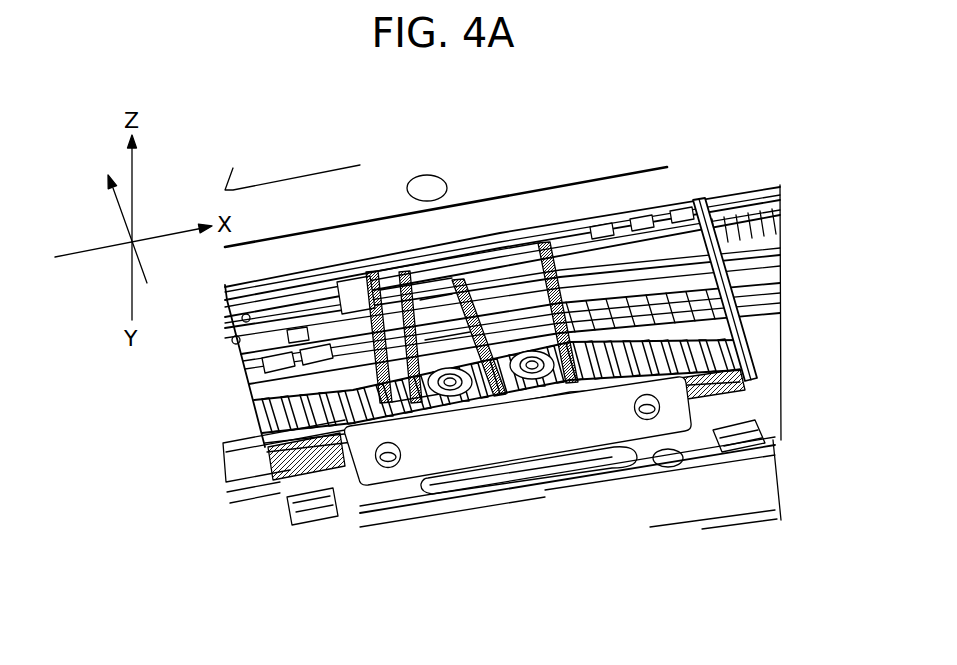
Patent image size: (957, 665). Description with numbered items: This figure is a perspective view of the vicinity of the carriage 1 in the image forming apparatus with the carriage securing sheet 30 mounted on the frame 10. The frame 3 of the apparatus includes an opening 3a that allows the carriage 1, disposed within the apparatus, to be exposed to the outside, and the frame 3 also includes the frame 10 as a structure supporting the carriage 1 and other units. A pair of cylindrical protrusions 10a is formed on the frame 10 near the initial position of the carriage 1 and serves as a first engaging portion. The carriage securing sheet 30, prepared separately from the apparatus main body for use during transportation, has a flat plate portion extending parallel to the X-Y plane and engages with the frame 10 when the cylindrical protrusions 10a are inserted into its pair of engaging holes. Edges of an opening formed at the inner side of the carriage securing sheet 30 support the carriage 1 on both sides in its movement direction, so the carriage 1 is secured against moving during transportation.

The carriage 1 is at (493, 400).
The frame 3 is at (770, 537).
The opening 3a is at (712, 157).
The frame 10 is at (353, 507).
The cylindrical protrusions 10a is at (389, 468).
The carriage securing sheet 30 is at (465, 447).